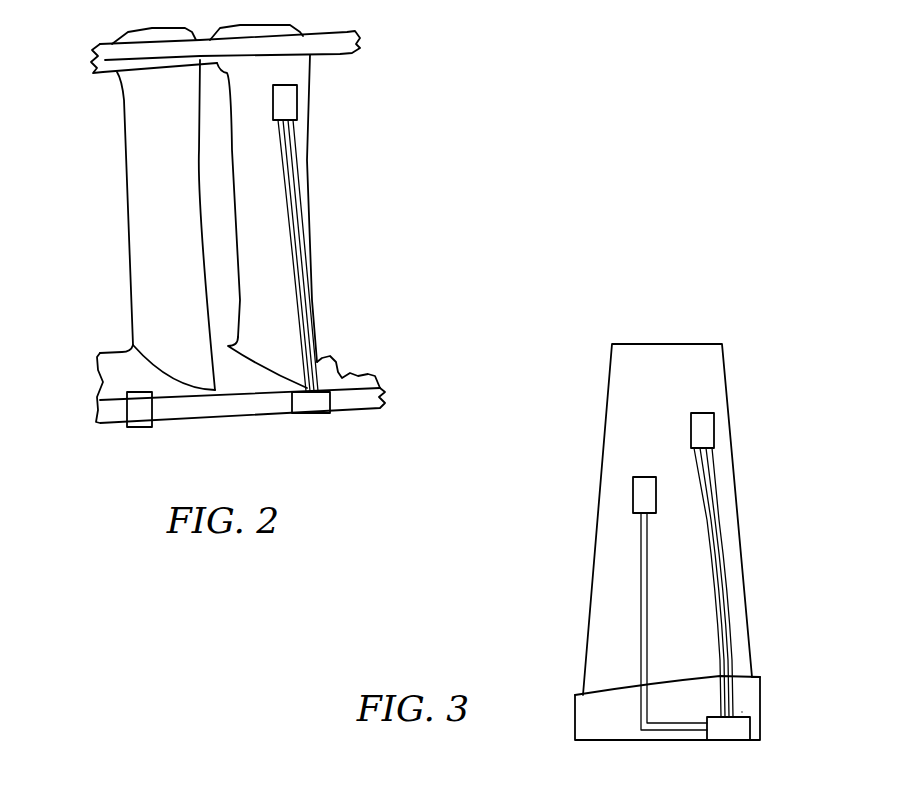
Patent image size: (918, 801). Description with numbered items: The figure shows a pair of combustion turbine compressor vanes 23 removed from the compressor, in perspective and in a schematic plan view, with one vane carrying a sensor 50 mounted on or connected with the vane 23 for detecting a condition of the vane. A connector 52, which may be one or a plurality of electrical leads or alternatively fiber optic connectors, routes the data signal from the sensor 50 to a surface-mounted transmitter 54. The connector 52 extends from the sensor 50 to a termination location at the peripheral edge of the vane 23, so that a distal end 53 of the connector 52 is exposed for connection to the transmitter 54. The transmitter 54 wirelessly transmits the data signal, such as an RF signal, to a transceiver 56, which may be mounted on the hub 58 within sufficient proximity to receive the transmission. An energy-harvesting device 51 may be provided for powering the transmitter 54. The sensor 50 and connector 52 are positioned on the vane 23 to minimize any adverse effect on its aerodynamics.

In FIG. 2, the vane 23 is at (245, 143).
In FIG. 3, the vane 23 is at (723, 372).
In FIG. 2, the sensor 50 is at (297, 104).
In FIG. 3, the sensor 50 is at (714, 430).
In FIG. 3, the energy-harvesting device 51 is at (633, 492).
In FIG. 2, the connector 52 is at (300, 283).
In FIG. 3, the connector 52 is at (703, 493).
In FIG. 2, the distal end 53 is at (333, 378).
In FIG. 3, the distal end 53 is at (742, 712).
In FIG. 2, the transmitter 54 is at (313, 403).
In FIG. 3, the transmitter 54 is at (725, 730).
In FIG. 2, the transceiver 56 is at (138, 417).
In FIG. 2, the hub 58 is at (117, 367).